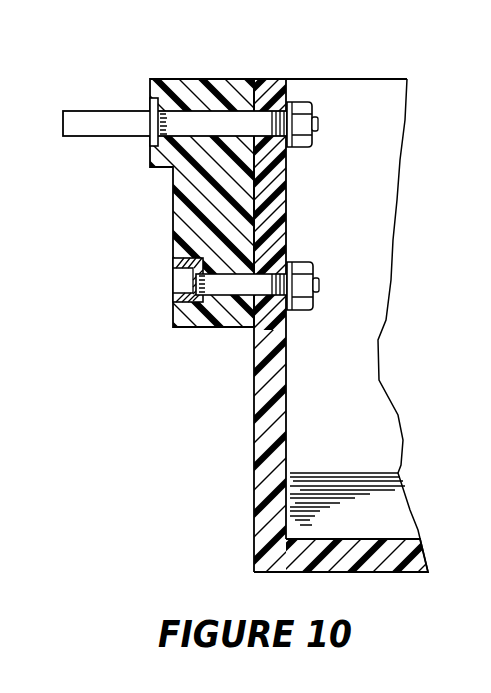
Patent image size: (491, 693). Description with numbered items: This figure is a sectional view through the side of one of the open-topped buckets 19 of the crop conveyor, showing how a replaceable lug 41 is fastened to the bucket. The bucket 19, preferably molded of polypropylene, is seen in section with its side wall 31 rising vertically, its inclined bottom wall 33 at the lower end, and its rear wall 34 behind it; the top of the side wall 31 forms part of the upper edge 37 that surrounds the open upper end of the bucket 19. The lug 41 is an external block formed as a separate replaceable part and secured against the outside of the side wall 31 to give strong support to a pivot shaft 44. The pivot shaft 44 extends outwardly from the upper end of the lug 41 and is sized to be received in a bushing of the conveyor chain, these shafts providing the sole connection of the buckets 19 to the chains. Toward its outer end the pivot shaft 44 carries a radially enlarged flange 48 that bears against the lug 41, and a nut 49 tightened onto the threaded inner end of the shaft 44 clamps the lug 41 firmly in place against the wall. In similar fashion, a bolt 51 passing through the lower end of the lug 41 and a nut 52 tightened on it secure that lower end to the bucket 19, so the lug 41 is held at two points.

The bucket 19 is at (380, 79).
The side wall 31 is at (263, 437).
The inclined bottom wall 33 is at (405, 555).
The rear wall 34 is at (378, 212).
The upper edge 37 is at (303, 79).
The lug 41 is at (173, 228).
The pivot shaft 44 is at (119, 122).
The flange 48 is at (153, 141).
The nut 49 is at (311, 141).
The bolt 51 is at (185, 290).
The nut 52 is at (311, 263).